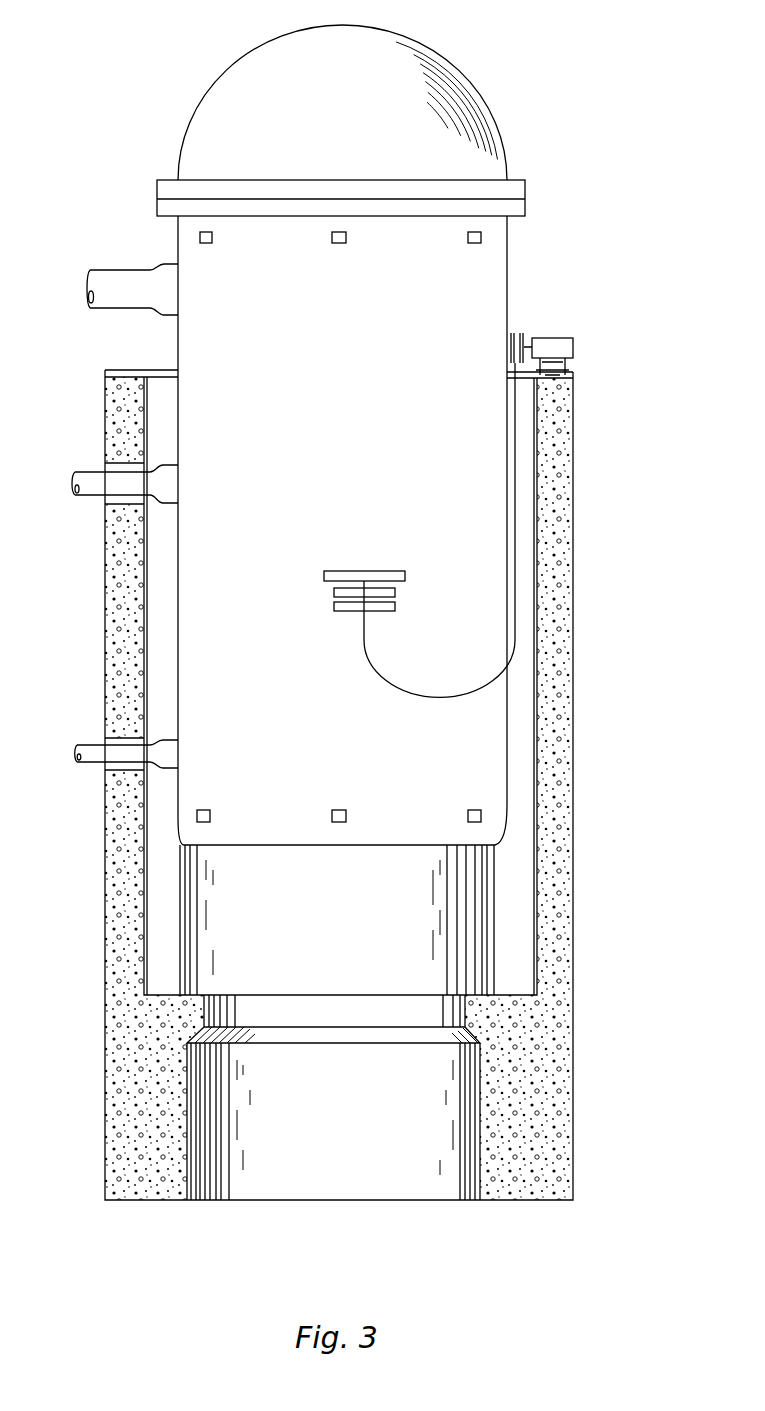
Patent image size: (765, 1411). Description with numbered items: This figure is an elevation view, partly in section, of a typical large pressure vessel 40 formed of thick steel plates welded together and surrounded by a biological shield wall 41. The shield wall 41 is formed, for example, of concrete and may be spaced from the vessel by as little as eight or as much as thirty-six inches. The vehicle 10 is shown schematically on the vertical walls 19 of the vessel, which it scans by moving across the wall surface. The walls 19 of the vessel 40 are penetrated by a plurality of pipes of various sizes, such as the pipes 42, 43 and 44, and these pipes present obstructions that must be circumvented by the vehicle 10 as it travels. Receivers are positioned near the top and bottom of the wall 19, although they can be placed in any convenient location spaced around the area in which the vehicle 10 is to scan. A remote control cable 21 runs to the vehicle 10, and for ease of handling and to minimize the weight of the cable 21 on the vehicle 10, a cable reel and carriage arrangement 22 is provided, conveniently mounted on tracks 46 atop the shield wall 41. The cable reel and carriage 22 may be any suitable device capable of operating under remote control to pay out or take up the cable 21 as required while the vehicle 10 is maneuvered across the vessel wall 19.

The vehicle 10 is at (334, 622).
The vertical wall 19 is at (349, 402).
The remote control cable 21 is at (440, 698).
The cable reel and carriage arrangement 22 is at (557, 338).
The pressure vessel 40 is at (176, 594).
The biological shield wall 41 is at (105, 670).
The pipe 42 is at (128, 268).
The pipe 43 is at (90, 472).
The pipe 44 is at (87, 765).
The tracks 46 is at (575, 372).